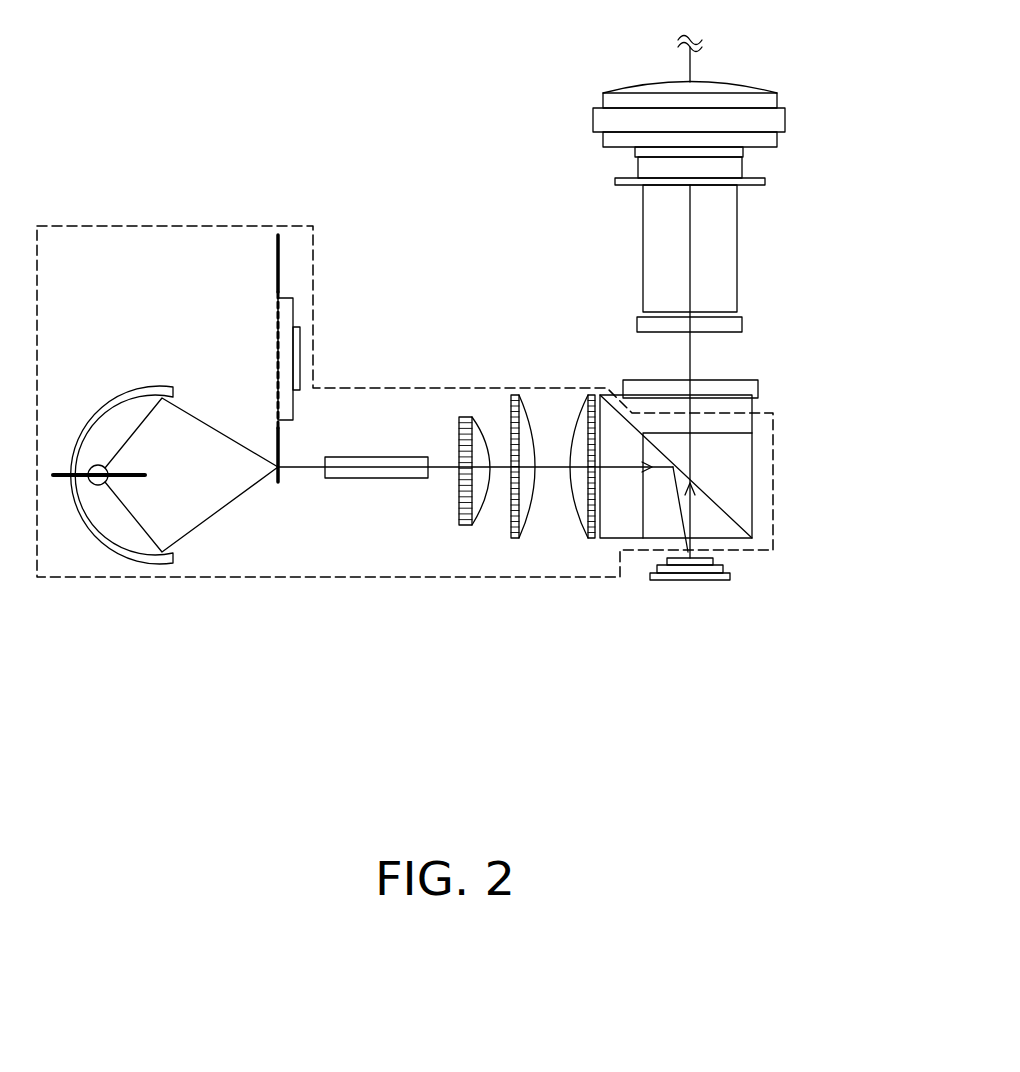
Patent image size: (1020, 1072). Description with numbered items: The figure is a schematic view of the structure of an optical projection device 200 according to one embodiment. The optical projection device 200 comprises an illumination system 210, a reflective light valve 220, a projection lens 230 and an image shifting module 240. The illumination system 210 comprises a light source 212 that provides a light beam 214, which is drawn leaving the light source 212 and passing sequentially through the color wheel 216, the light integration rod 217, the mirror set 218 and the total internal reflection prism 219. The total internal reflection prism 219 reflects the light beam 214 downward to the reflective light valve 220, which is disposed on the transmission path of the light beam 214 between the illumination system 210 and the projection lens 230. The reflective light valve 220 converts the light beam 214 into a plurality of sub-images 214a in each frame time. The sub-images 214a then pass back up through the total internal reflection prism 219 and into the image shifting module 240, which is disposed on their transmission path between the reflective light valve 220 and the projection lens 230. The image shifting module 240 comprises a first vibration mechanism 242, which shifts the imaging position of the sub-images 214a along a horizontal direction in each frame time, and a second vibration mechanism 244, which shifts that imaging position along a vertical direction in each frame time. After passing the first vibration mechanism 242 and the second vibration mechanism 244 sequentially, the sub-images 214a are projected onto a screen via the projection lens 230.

The optical projection device 200 is at (494, 695).
The illumination system 210 is at (395, 385).
The light source 212 is at (100, 463).
The light beam 214 is at (300, 468).
The sub-images 214a is at (693, 448).
The color wheel 216 is at (280, 255).
The light integration rod 217 is at (375, 468).
The mirror set 218 is at (598, 381).
The total internal reflection prism 219 is at (743, 497).
The reflective light valve 220 is at (708, 562).
The projection lens 230 is at (728, 228).
The image shifting module 240 is at (766, 363).
The first vibration mechanism 242 is at (737, 394).
The second vibration mechanism 244 is at (732, 323).